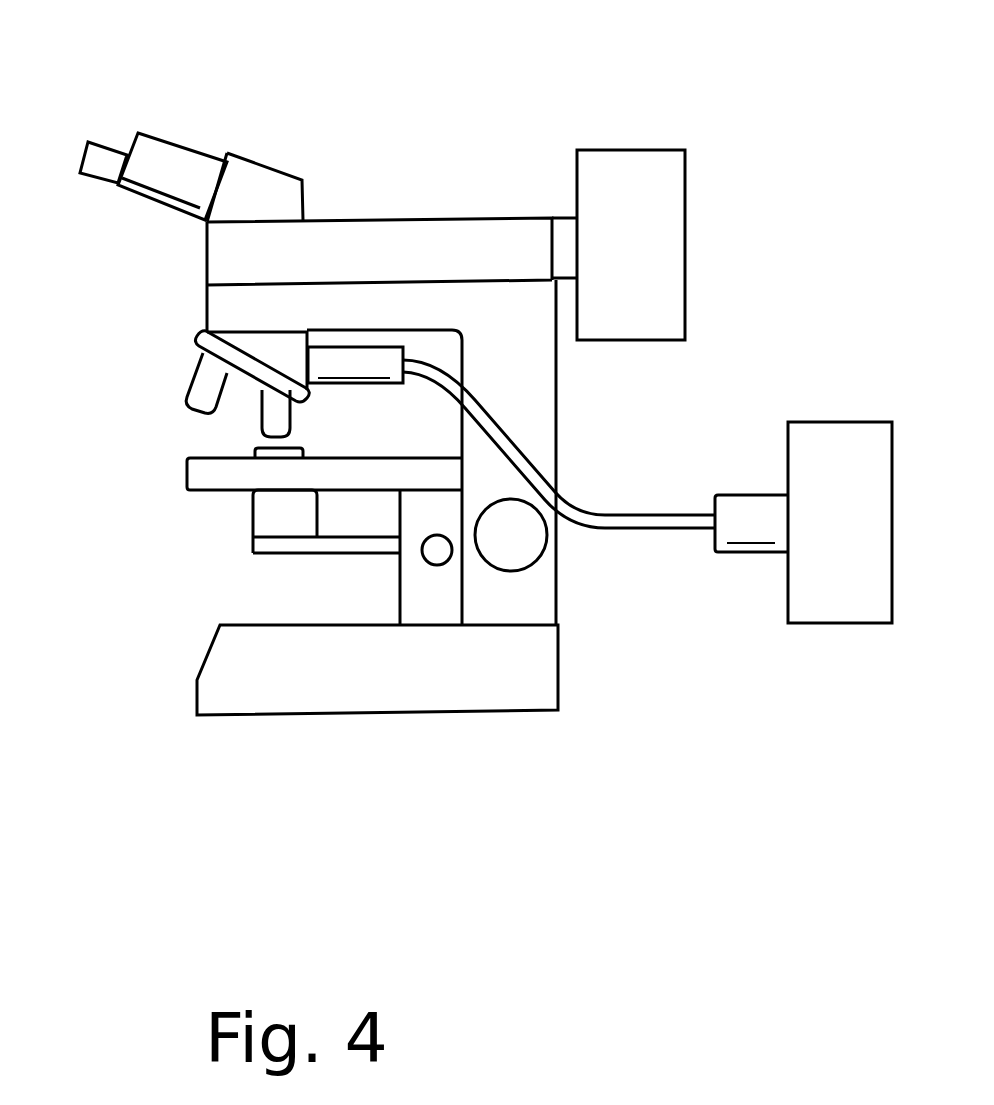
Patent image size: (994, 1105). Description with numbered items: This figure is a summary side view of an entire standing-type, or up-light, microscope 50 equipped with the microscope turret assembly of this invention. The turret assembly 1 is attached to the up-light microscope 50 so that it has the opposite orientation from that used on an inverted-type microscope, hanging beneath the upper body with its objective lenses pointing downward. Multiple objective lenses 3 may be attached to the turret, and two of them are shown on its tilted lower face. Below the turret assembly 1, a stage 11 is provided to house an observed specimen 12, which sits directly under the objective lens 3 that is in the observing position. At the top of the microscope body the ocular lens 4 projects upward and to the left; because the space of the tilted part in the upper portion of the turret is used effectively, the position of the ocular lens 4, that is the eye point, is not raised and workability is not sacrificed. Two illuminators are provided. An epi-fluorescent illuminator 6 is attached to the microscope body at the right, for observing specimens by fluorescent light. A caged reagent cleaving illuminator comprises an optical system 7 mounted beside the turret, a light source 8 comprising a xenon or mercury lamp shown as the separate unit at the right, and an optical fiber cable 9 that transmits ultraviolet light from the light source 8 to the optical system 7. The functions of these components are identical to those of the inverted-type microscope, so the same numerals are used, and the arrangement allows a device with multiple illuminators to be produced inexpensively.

The up-light microscope 50 is at (568, 70).
The turret assembly 1 is at (178, 336).
The objective lens 3 is at (180, 387).
The ocular lens 4 is at (112, 150).
The epi-fluorescent illuminator 6 is at (673, 243).
The optical system 7 is at (362, 360).
The light source 8 is at (800, 603).
The optical fiber cable 9 is at (625, 515).
The stage 11 is at (180, 478).
The observed specimen 12 is at (262, 445).